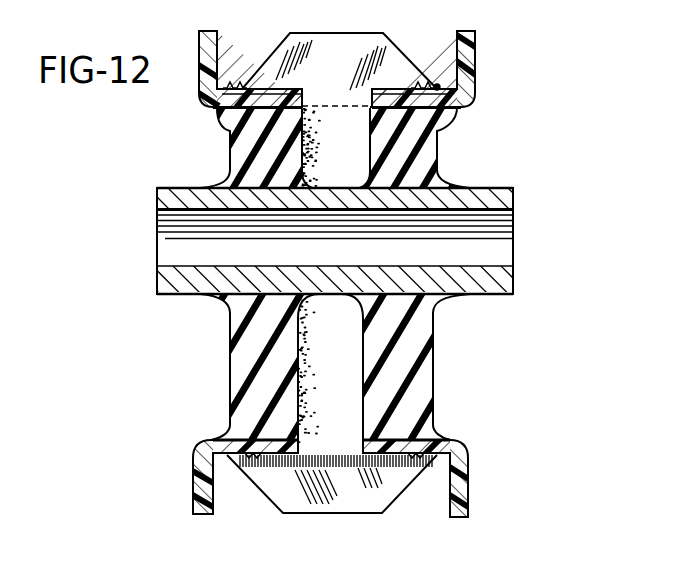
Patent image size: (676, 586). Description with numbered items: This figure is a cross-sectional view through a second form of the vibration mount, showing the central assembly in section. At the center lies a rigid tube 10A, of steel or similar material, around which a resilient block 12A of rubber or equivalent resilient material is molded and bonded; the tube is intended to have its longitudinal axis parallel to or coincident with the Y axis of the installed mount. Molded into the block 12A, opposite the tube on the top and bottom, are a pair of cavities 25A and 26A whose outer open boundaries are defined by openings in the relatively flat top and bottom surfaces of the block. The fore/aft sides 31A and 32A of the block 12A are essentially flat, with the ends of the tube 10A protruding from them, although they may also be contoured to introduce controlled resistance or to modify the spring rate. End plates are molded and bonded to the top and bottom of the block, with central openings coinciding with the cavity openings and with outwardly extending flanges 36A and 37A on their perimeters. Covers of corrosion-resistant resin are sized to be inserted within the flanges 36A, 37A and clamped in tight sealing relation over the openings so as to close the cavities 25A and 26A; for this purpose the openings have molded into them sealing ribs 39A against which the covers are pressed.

The tube 10A is at (463, 268).
The resilient block 12A is at (338, 293).
The cavity 25A is at (363, 152).
The cavity 26A is at (354, 381).
The side of the block 31A is at (231, 145).
The side of the block 32A is at (433, 392).
The flange 36A is at (457, 55).
The flange 37A is at (270, 487).
The sealing rib 39A is at (248, 84).